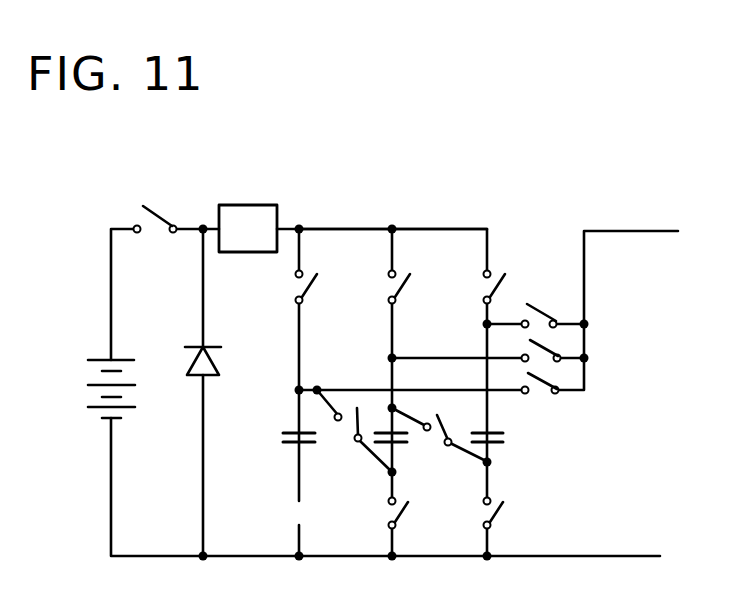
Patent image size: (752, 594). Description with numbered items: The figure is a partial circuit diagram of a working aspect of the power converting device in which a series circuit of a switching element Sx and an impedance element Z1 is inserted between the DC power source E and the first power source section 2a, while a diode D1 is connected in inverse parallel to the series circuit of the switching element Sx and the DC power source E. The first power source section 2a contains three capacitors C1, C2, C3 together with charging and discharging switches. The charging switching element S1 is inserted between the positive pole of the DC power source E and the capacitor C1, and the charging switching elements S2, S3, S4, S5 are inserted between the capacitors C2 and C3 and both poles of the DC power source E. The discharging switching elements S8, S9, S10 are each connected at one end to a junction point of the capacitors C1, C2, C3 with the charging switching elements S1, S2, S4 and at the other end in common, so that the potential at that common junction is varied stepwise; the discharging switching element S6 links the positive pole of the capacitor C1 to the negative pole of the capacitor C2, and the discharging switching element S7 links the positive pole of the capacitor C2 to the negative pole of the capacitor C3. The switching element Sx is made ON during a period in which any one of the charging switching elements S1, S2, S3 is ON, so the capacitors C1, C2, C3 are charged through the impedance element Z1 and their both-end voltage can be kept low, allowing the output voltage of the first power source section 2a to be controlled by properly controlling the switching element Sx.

The first power source section 2a is at (438, 218).
The switching element Sx is at (157, 202).
The DC power source E is at (113, 368).
The impedance element Z1 is at (244, 212).
The diode D1 is at (230, 359).
The charging switching element S1 is at (279, 285).
The charging switching element S2 is at (371, 285).
The charging switching element S3 is at (365, 522).
The charging switching element S4 is at (466, 285).
The charging switching element S5 is at (462, 522).
The discharging switching element S6 is at (354, 440).
The discharging switching element S7 is at (439, 449).
The discharging switching element S8 is at (538, 297).
The discharging switching element S9 is at (558, 348).
The discharging switching element S10 is at (560, 378).
The capacitor C1 is at (276, 435).
The capacitor C2 is at (381, 426).
The capacitor C3 is at (514, 438).